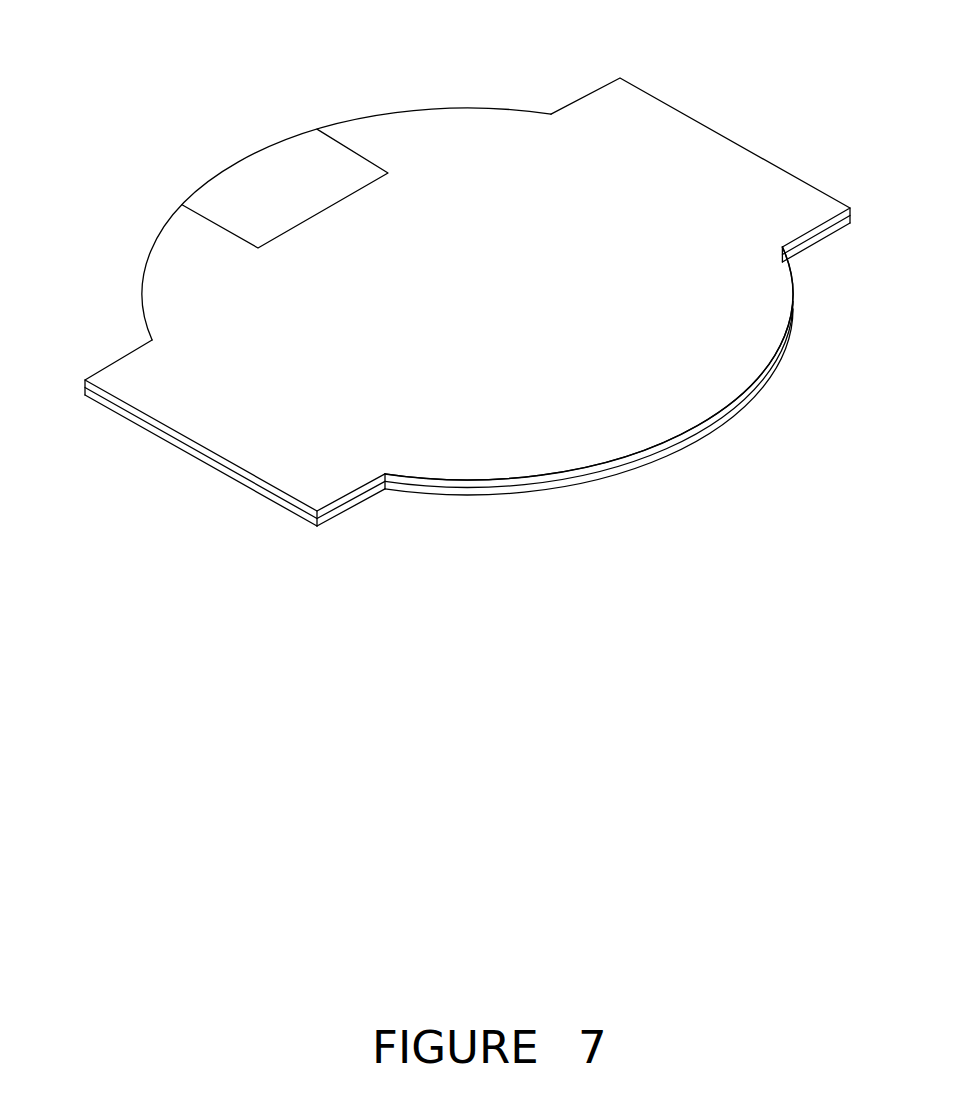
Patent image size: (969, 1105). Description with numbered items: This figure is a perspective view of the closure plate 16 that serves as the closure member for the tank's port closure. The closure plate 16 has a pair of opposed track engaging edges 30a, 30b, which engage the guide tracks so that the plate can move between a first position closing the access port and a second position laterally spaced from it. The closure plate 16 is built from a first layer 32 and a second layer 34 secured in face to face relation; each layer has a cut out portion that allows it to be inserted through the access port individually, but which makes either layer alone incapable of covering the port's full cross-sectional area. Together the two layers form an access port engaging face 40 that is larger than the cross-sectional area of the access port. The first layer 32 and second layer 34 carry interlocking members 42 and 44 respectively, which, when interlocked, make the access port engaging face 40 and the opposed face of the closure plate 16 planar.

The closure plate 16 is at (456, 270).
The track engaging edge 30a is at (700, 135).
The track engaging edge 30b is at (197, 410).
The first layer 32 is at (644, 363).
The second layer 34 is at (639, 395).
The access port engaging face 40 is at (517, 282).
The interlocking member 42 is at (589, 420).
The interlocking member 44 is at (278, 158).